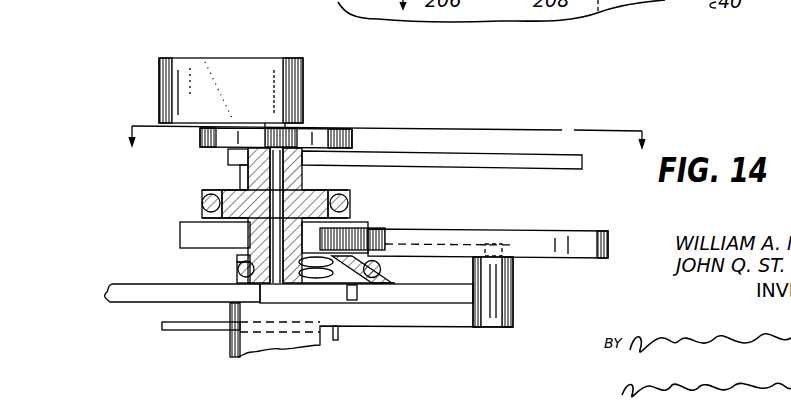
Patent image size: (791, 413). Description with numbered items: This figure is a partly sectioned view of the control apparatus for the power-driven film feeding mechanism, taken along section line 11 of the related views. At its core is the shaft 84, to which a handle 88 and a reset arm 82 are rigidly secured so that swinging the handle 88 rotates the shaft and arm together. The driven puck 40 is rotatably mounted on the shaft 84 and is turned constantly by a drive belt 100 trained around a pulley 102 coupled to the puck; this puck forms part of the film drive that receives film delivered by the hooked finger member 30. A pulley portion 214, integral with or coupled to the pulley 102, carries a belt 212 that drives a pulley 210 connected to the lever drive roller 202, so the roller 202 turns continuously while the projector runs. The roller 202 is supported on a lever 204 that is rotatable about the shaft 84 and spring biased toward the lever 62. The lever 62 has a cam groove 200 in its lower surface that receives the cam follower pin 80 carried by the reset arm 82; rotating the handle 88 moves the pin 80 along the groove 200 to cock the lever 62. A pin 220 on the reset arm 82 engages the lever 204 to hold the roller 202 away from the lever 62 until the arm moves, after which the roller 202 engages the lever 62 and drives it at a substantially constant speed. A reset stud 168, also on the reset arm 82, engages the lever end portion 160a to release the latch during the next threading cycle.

The section line 11- 11 is at (378, 150).
The handle 88 is at (183, 58).
The driven roller or puck 40 is at (205, 138).
The finger member 30 is at (528, 169).
The shaft 84 is at (275, 166).
The drive belt 100 is at (204, 200).
The pulley 102 is at (320, 190).
The pulley portion 214 is at (246, 238).
The belt 212 is at (238, 270).
The lever drive puck or roller 202 is at (350, 224).
The cam follower pin 80 is at (494, 238).
The cam groove 200 is at (452, 243).
The lever 62 is at (564, 232).
The lever 204 is at (105, 287).
The pulley 210 is at (390, 292).
The pin 220 is at (355, 300).
The reset stud 168 is at (336, 341).
The end portion of lever 160a is at (190, 329).
The reset arm 82 is at (468, 314).